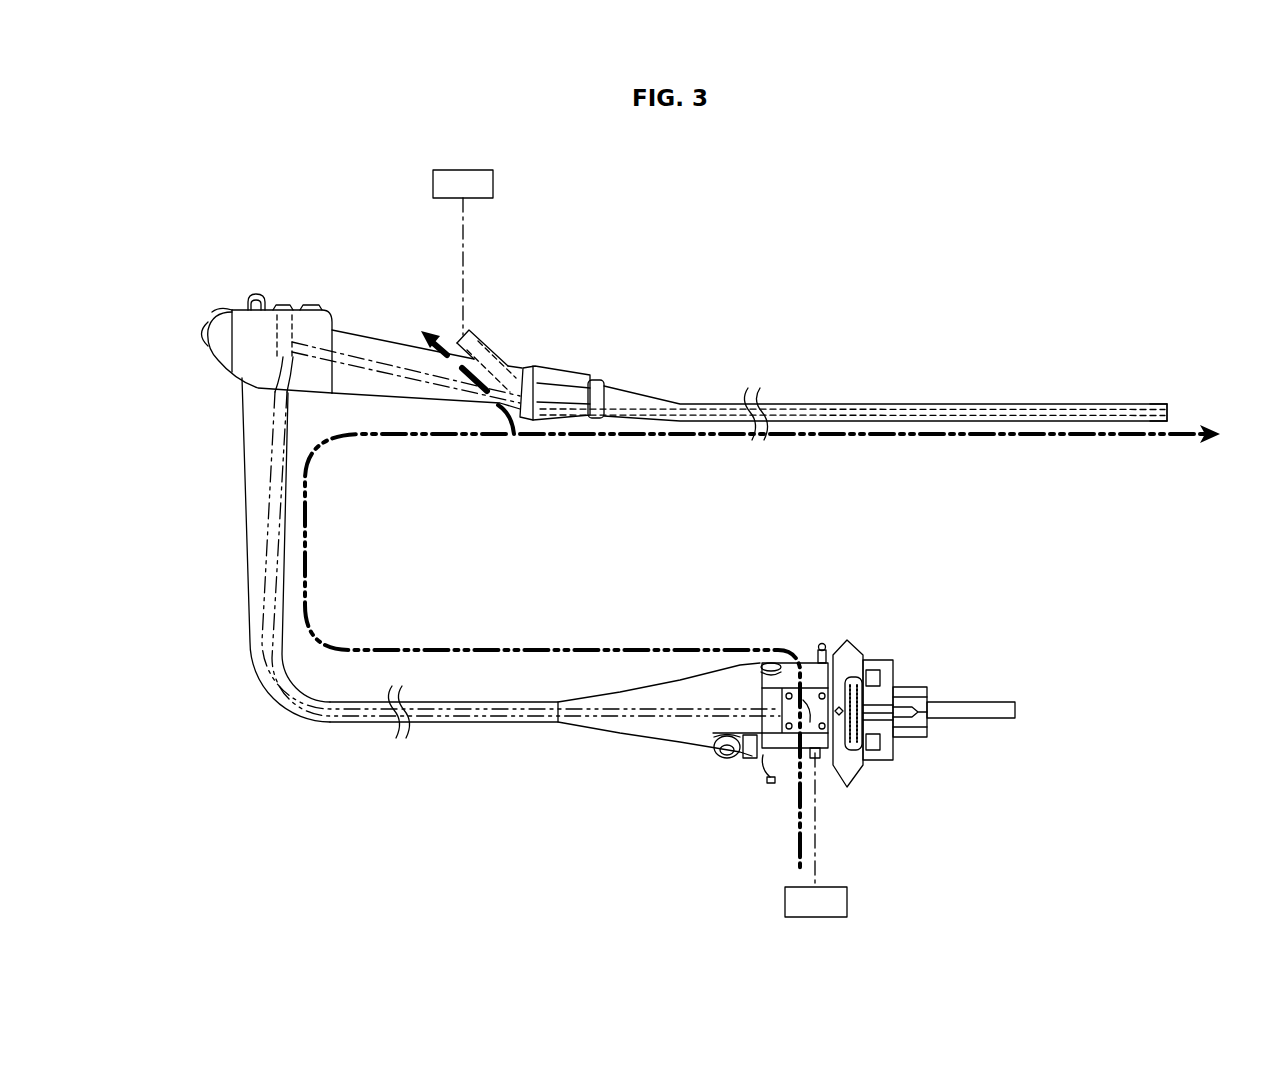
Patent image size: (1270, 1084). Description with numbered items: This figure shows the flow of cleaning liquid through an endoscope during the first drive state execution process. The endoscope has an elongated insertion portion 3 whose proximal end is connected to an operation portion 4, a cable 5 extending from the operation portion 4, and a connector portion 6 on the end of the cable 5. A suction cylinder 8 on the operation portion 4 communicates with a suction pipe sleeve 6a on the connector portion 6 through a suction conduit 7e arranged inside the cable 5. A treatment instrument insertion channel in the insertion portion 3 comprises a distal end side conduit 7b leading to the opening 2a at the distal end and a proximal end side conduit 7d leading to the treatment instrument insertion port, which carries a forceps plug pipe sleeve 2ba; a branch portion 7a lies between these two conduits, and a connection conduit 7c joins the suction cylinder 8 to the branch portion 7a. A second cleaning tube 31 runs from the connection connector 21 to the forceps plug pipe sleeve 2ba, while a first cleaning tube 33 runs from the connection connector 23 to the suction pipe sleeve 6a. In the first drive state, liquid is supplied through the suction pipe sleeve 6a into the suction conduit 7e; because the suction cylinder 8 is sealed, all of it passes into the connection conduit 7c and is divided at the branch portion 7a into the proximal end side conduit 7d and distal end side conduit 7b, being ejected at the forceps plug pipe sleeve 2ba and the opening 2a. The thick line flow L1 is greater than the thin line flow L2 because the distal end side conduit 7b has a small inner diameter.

The operation portion 4 is at (210, 322).
The suction cylinder 8 is at (296, 305).
The connection conduit 7c is at (388, 360).
The forceps plug pipe sleeve 2ba is at (467, 333).
The proximal end side conduit 7d is at (500, 350).
The branch portion 7a is at (524, 367).
The insertion portion 3 is at (985, 403).
The distal end side conduit 7b is at (805, 410).
The opening 2a is at (1172, 410).
The connection connector 21 is at (493, 183).
The second cleaning tube 31 is at (463, 248).
The flow L1 is at (308, 565).
The flow L2 is at (672, 440).
The suction conduit 7e is at (258, 512).
The cable 5 is at (324, 724).
The connector portion 6 is at (683, 752).
The suction pipe sleeve 6a is at (823, 758).
The first cleaning tube 33 is at (817, 846).
The connection connector 23 is at (847, 900).